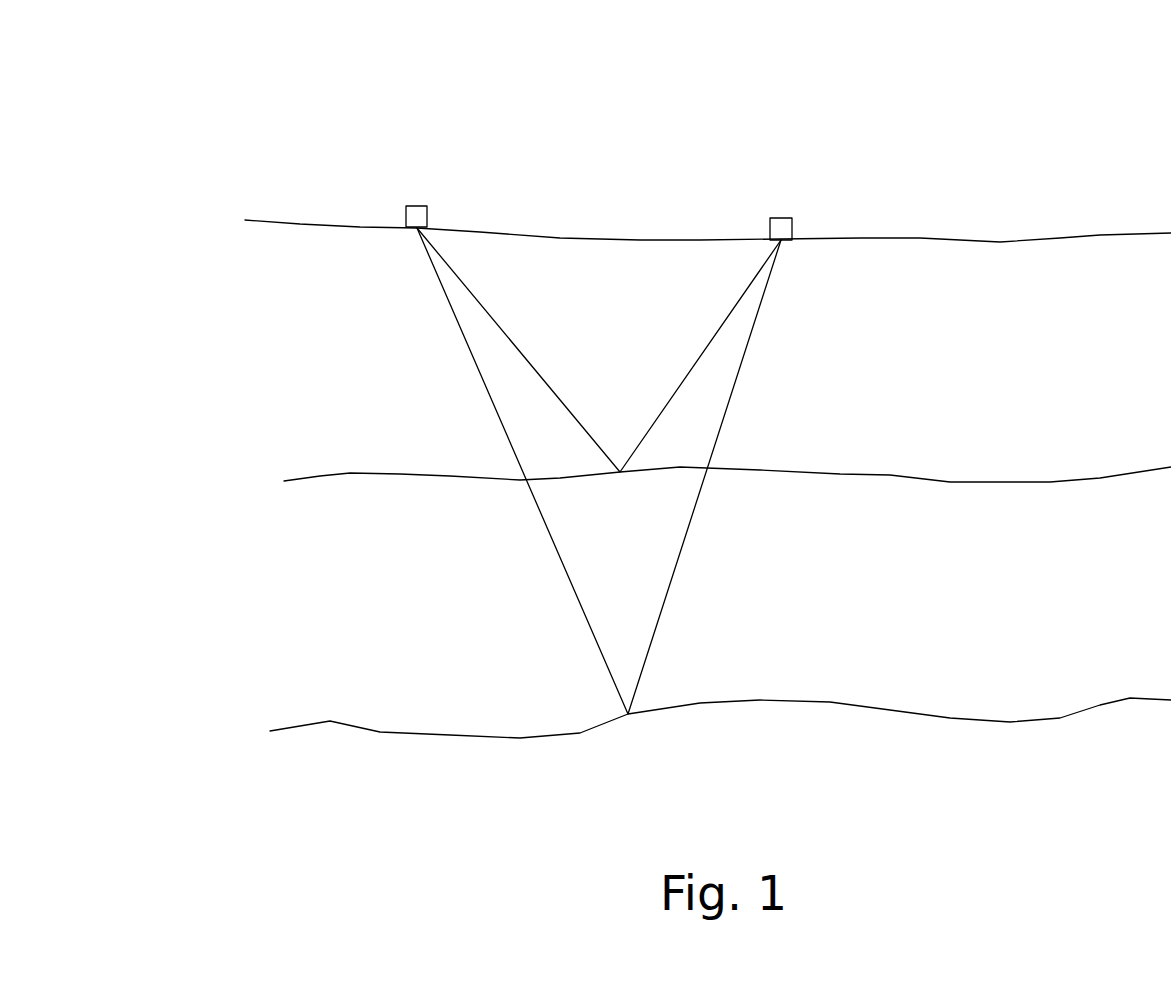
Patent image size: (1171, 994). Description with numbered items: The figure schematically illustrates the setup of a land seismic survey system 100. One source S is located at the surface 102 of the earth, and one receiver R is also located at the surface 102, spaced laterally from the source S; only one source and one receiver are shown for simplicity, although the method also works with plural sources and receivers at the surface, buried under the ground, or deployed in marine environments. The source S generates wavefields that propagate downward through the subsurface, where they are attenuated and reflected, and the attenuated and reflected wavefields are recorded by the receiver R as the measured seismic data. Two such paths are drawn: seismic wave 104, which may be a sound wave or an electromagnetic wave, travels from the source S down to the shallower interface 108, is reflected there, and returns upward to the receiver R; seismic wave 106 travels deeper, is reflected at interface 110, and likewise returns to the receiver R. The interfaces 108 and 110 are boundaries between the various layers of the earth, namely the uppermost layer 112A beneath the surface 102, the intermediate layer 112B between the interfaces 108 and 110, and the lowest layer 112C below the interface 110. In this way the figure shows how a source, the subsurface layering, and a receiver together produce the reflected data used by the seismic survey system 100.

The seismic survey system 100 is at (792, 120).
The surface 102 is at (935, 237).
The seismic wave 104 is at (497, 322).
The seismic wave 106 is at (550, 540).
The interface 108 is at (893, 476).
The interface 110 is at (893, 712).
The layer 112A is at (1067, 353).
The layer 112B is at (1066, 590).
The layer 112C is at (1068, 801).
The source S is at (412, 206).
The receiver R is at (781, 218).